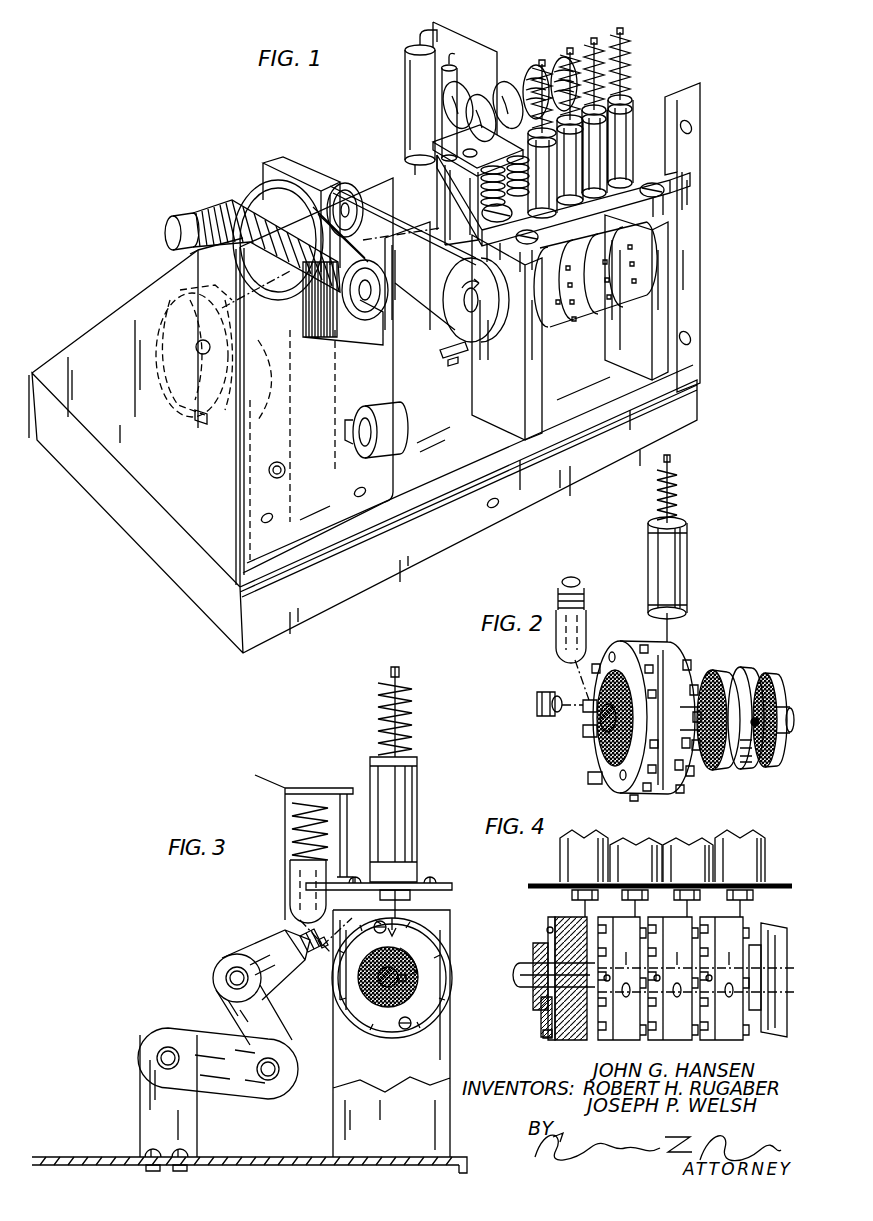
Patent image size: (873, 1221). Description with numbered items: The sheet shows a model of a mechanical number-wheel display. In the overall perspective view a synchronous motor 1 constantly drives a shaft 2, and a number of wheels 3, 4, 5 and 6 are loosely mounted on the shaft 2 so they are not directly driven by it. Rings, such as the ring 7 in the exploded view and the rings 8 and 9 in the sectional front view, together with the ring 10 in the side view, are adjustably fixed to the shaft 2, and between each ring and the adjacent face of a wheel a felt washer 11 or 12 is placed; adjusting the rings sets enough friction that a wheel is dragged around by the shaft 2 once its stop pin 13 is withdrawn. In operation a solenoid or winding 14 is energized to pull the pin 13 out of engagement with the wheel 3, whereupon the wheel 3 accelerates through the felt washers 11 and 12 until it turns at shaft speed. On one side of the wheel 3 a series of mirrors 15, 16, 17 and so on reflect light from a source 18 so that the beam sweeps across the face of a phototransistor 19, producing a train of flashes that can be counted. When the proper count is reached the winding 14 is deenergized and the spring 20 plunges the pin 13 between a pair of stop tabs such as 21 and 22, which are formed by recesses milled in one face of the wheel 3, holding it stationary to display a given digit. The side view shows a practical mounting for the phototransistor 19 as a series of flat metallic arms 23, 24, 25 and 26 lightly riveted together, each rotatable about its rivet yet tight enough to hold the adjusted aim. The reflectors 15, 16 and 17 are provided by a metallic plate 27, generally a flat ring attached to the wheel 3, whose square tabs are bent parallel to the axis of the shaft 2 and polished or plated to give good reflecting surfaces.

In FIG. 1, the synchronous motor 1 is at (196, 212).
In FIG. 1, the shaft 2 is at (506, 312).
In FIG. 2, the shaft 2 is at (784, 707).
In FIG. 3, the shaft 2 is at (404, 938).
In FIG. 4, the shaft 2 is at (522, 967).
In FIG. 1, the number wheel 3 is at (556, 318).
In FIG. 2, the number wheel 3 is at (647, 642).
In FIG. 3, the number wheel 3 is at (440, 972).
In FIG. 4, the number wheel 3 is at (563, 910).
In FIG. 1, the number wheel 4 is at (583, 318).
In FIG. 4, the number wheel 4 is at (620, 917).
In FIG. 1, the number wheel 5 is at (602, 304).
In FIG. 4, the number wheel 5 is at (671, 917).
In FIG. 1, the number wheel 6 is at (637, 298).
In FIG. 4, the number wheel 6 is at (725, 917).
In FIG. 2, the ring 7 is at (738, 667).
In FIG. 4, the ring 8 is at (542, 943).
In FIG. 4, the ring 9 is at (755, 937).
In FIG. 3, the ring 10 is at (413, 987).
In FIG. 2, the felt washer 11 is at (702, 673).
In FIG. 2, the felt washer 12 is at (760, 670).
In FIG. 2, the pin 13 is at (675, 490).
In FIG. 3, the pin 13 is at (403, 704).
In FIG. 4, the pin 13 is at (583, 907).
In FIG. 2, the solenoid or winding 14 is at (688, 565).
In FIG. 3, the solenoid or winding 14 is at (412, 815).
In FIG. 2, the mirror 15 is at (583, 728).
In FIG. 4, the mirror 15 is at (547, 1035).
In FIG. 2, the mirror 16 is at (583, 750).
In FIG. 2, the mirror 17 is at (595, 775).
In FIG. 2, the light source 18 is at (583, 606).
In FIG. 3, the light source 18 is at (297, 877).
In FIG. 2, the phototransistor 19 is at (537, 692).
In FIG. 3, the phototransistor 19 is at (317, 968).
In FIG. 2, the spring 20 is at (680, 516).
In FIG. 3, the spring 20 is at (410, 722).
In FIG. 2, the tab 21 is at (687, 745).
In FIG. 2, the tab 22 is at (686, 768).
In FIG. 3, the flat metallic arm 23 is at (143, 1103).
In FIG. 3, the flat metallic arm 24 is at (225, 1087).
In FIG. 3, the flat metallic arm 25 is at (222, 1012).
In FIG. 3, the flat metallic arm 26 is at (272, 947).
In FIG. 2, the metallic plate 27 is at (598, 664).
In FIG. 4, the metallic plate 27 is at (538, 1012).